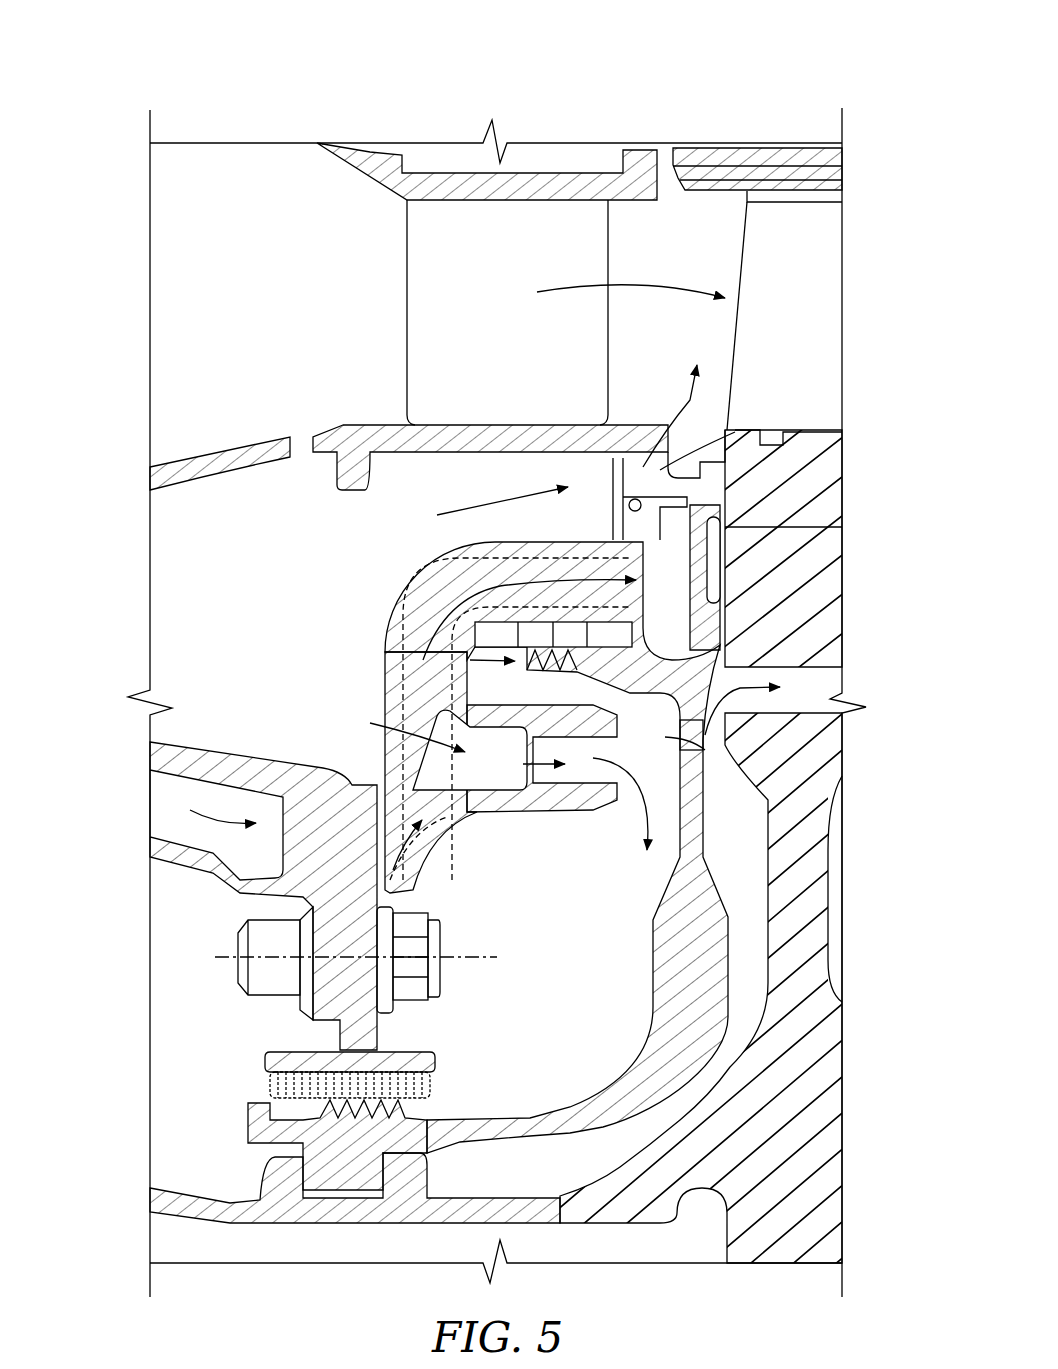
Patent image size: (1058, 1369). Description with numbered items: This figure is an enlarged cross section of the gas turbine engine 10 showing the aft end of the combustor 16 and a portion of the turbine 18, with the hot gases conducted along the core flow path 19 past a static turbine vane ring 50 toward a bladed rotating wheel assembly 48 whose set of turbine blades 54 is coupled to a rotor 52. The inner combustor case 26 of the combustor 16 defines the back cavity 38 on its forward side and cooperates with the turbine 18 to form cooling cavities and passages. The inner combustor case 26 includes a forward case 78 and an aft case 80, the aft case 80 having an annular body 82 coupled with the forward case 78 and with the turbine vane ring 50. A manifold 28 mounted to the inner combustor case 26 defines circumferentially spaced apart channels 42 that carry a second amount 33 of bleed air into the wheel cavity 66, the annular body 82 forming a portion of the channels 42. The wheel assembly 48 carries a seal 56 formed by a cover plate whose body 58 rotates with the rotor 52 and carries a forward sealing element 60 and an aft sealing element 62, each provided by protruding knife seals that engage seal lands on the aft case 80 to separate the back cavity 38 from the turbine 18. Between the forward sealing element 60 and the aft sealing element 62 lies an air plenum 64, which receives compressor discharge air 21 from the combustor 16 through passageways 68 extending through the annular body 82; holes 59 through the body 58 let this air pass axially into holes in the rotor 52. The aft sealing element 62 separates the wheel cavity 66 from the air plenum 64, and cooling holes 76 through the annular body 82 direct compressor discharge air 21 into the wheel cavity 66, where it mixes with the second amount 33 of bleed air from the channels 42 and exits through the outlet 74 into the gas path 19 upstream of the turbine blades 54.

The gas turbine engine 10 is at (228, 88).
The combustor 16 is at (172, 278).
The turbine 18 is at (590, 130).
The core flow path 19 is at (680, 298).
The compressed gases 21 is at (405, 752).
The inner combustor case 26 is at (210, 878).
The manifold 28 is at (227, 760).
The second amount of bleed air 33 is at (440, 600).
The back cavity 38 is at (198, 1110).
The channels 42 is at (187, 760).
The bladed rotating wheel assembly 48 is at (737, 226).
The turbine vane ring 50 is at (405, 308).
The rotor 52 is at (815, 830).
The set of turbine blades 54 is at (805, 263).
The seal 56 is at (733, 940).
The body 58 is at (660, 980).
The holes 59 is at (700, 745).
The forward sealing element 60 is at (418, 1110).
The aft sealing element 62 is at (387, 657).
The air plenum 64 is at (568, 902).
The wheel cavity 66 is at (683, 592).
The passageways 68 is at (550, 767).
The outlet 74 is at (695, 437).
The cooling holes 76 is at (612, 476).
The forward case 78 is at (257, 767).
The aft case 80 is at (423, 657).
The annular body 82 is at (384, 767).